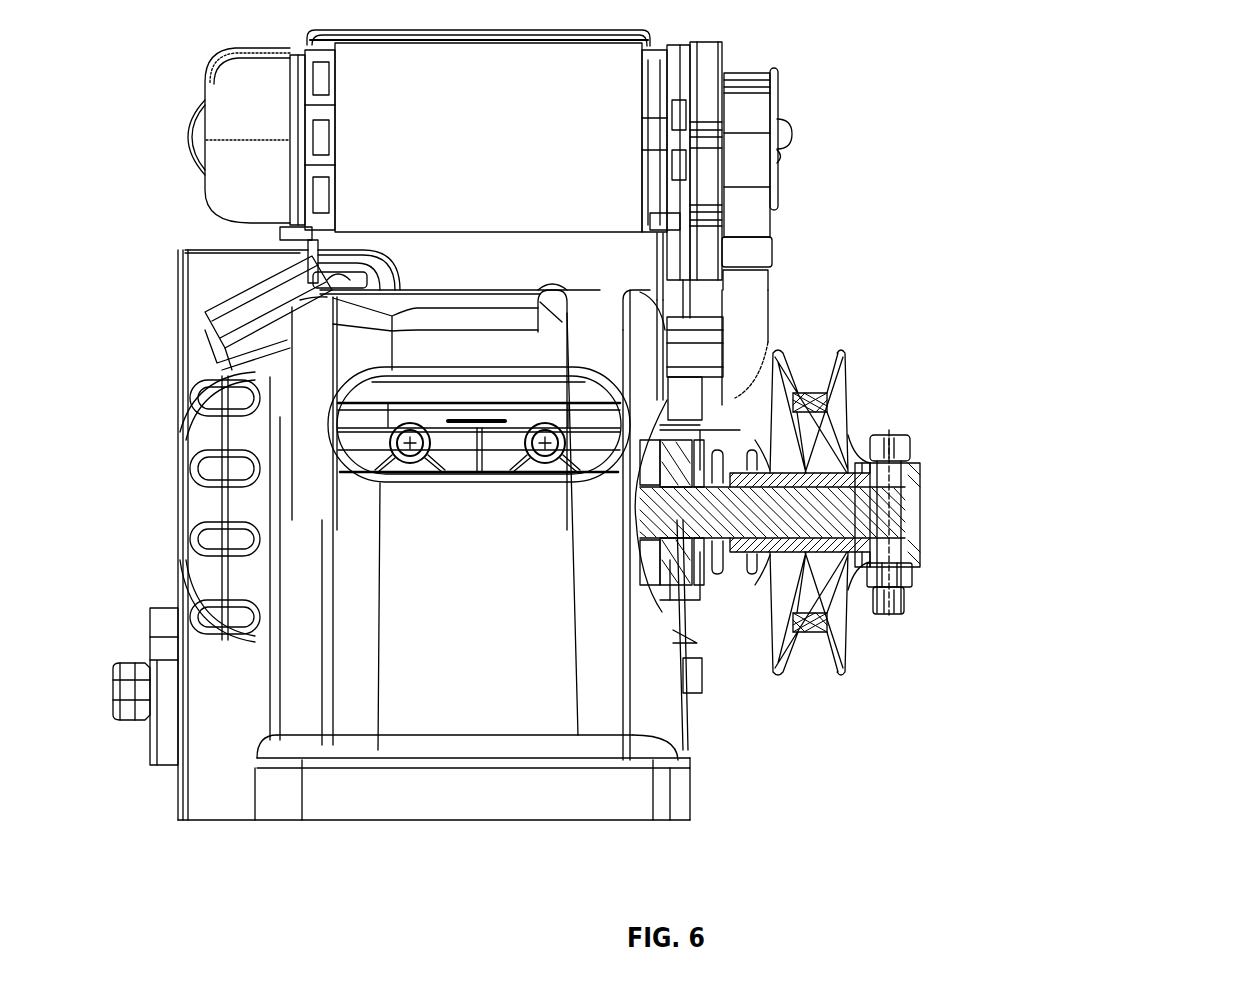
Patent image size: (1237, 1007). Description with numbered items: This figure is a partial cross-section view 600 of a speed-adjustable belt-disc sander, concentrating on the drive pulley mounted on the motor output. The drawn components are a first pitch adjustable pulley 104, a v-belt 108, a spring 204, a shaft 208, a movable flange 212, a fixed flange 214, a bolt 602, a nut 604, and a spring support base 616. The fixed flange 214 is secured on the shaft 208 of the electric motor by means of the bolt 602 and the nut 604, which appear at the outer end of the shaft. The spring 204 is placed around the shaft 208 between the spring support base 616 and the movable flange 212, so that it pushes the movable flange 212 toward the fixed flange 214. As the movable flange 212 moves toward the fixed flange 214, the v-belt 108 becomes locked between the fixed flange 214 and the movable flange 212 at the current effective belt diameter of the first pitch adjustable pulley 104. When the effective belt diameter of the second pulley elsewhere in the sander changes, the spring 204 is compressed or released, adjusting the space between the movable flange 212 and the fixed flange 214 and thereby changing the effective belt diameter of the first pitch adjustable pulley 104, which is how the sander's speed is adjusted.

The partial cross-section view 600 is at (1141, 130).
The first pitch adjustable pulley 104 is at (845, 393).
The v-belt 108 is at (793, 523).
The spring 204 is at (700, 560).
The shaft 208 is at (780, 673).
The movable flange 212 is at (762, 560).
The fixed flange 214 is at (872, 605).
The bolt 602 is at (899, 495).
The nut 604 is at (905, 602).
The spring support base 616 is at (680, 582).